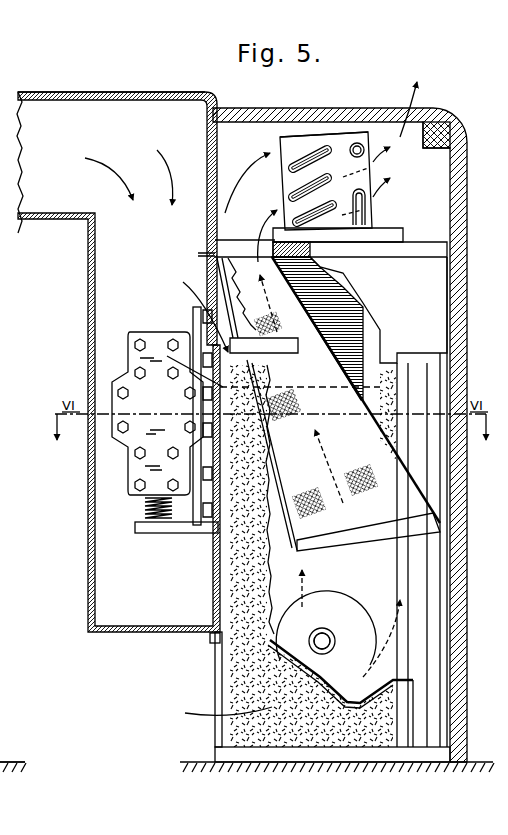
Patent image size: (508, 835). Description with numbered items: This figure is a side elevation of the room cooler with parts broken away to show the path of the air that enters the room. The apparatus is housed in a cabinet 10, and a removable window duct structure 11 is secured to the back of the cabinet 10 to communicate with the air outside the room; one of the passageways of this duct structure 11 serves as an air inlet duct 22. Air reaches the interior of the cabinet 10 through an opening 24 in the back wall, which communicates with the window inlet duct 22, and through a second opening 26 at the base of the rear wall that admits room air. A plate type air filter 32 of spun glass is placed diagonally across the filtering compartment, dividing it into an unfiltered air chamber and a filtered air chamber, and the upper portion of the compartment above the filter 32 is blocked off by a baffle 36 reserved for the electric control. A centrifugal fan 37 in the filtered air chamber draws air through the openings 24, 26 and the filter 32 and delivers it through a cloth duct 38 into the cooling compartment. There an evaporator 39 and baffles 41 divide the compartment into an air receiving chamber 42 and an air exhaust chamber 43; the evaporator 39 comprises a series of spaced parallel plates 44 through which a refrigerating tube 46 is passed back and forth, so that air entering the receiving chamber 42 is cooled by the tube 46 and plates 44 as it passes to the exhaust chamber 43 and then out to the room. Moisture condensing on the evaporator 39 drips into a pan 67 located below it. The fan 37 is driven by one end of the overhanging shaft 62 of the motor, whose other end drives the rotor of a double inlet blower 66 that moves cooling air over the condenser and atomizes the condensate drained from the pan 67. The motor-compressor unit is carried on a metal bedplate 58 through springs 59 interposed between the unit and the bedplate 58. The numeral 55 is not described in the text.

The cabinet 10 is at (467, 262).
The removable duct structure 11 is at (90, 92).
The air inlet duct 22 is at (105, 548).
The opening 24 is at (222, 380).
The opening 26 is at (215, 692).
The plate type air filter 32 is at (328, 651).
The baffle 36 is at (408, 270).
The centrifugal fan 37 is at (420, 617).
The cloth duct 38 is at (354, 443).
The evaporator 39 is at (326, 166).
The baffles 41 is at (370, 172).
The air receiving chamber 42 is at (251, 156).
The air exhaust chamber 43 is at (431, 180).
The spaced parallel plates 44 is at (280, 138).
The refrigerating tube 46 is at (300, 145).
The heat exchanger 55 is at (128, 354).
The metal bedplate 58 is at (188, 533).
The springs 59 is at (142, 510).
The overhanging shaft 62 is at (322, 632).
The double inlet blower 66 is at (0, 682).
The pan 67 is at (388, 226).